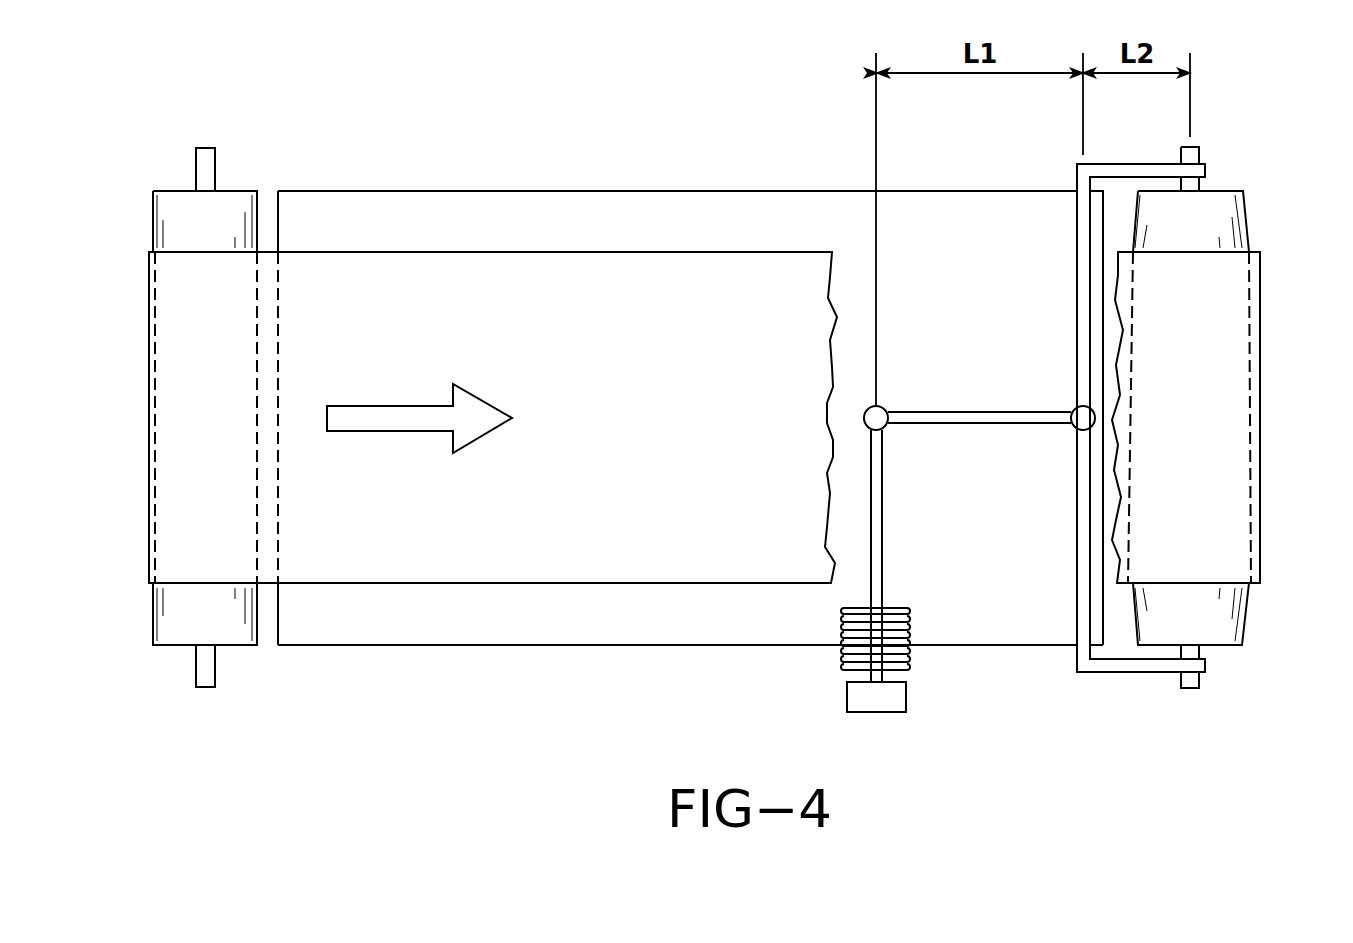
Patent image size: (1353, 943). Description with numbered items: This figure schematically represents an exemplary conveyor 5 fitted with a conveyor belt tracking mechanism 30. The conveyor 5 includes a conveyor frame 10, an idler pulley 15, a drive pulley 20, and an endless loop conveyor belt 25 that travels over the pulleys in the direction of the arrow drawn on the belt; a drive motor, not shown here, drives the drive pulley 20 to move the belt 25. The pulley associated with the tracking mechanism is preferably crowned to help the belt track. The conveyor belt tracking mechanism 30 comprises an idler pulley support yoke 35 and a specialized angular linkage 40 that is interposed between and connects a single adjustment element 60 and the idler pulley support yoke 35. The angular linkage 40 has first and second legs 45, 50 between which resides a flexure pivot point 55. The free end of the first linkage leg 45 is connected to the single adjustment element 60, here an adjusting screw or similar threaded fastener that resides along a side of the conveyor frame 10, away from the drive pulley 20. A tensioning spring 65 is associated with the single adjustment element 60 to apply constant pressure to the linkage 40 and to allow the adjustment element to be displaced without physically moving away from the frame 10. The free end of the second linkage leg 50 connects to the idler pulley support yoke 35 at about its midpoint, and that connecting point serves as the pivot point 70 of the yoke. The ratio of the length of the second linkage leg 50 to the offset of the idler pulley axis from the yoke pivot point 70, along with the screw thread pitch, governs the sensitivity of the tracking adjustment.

The conveyor 5 is at (1288, 157).
The conveyor frame 10 is at (375, 190).
The idler pulley 15 is at (1210, 605).
The drive pulley 20 is at (186, 625).
The endless loop conveyor belt 25 is at (400, 567).
The conveyor belt tracking mechanism 30 is at (1003, 710).
The idler pulley support yoke 35 is at (1131, 682).
The angular linkage 40 is at (905, 540).
The first linkage leg 45 is at (876, 498).
The second linkage leg 50 is at (972, 417).
The flexure pivot point 55 is at (882, 415).
The single adjustment element 60 is at (872, 700).
The tensioning spring 65 is at (845, 629).
The pivot point 70 is at (1085, 416).